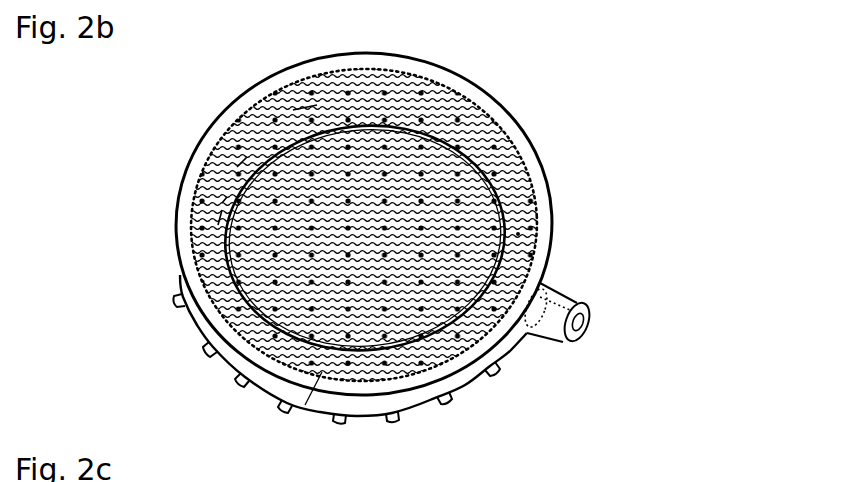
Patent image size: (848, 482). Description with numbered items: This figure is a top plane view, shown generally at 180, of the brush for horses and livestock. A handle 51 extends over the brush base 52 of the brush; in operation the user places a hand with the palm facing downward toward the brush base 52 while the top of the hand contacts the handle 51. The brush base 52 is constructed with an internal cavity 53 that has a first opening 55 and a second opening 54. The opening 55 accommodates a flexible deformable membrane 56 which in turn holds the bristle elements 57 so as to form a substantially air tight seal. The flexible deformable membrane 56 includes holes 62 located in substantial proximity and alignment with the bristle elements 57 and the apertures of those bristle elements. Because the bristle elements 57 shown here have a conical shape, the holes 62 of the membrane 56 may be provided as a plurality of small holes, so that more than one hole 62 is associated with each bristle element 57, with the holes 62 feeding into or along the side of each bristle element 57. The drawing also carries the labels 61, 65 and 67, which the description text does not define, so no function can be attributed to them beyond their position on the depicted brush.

The top plane view 180 is at (142, 147).
The handle 51 is at (453, 87).
The brush base 52 is at (478, 381).
The internal cavity 53 is at (538, 218).
The second opening 54 is at (270, 130).
The first opening 55 is at (275, 398).
The flexible deformable membrane 56 is at (530, 242).
The bristle element 57 is at (240, 386).
The inner ring 61 is at (518, 138).
The holes 62 is at (228, 254).
The nozzle opening 65 is at (590, 322).
The nozzle 67 is at (580, 343).